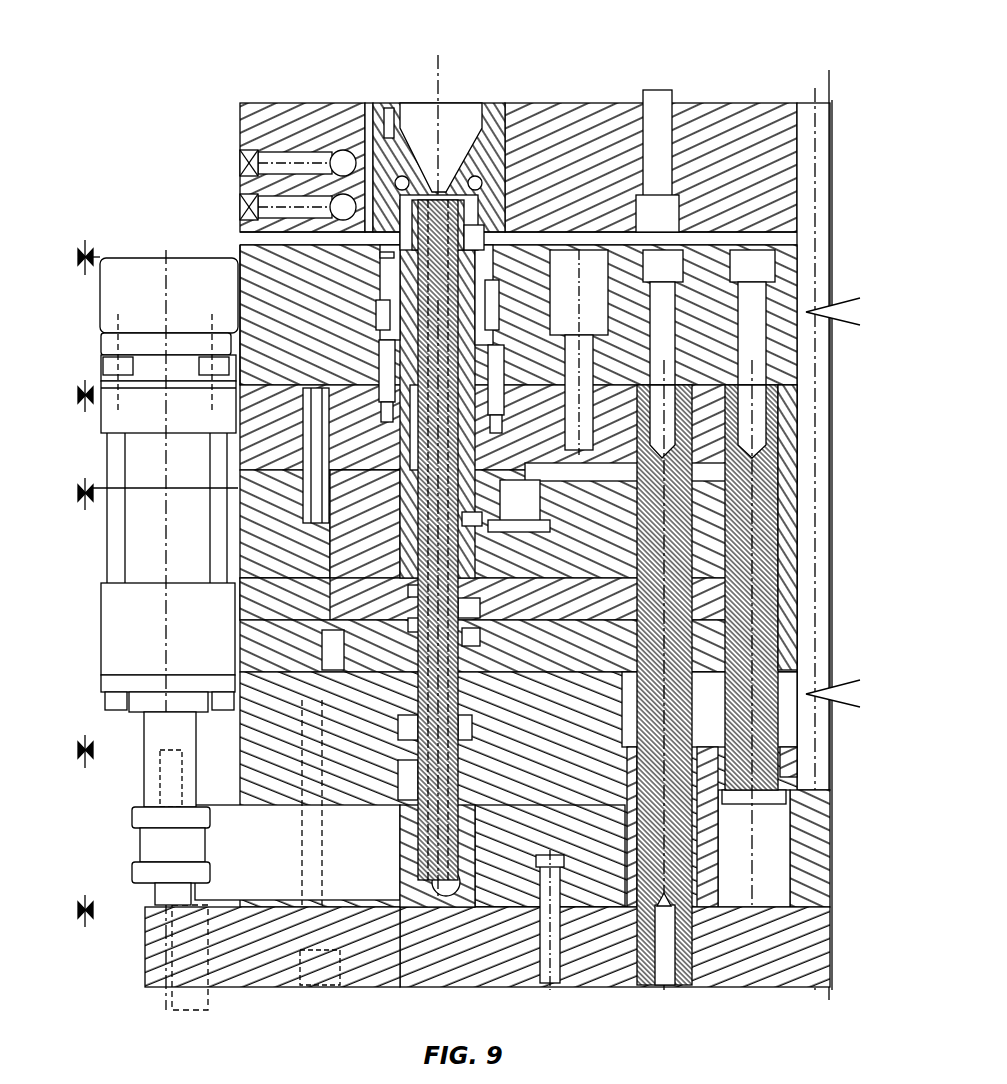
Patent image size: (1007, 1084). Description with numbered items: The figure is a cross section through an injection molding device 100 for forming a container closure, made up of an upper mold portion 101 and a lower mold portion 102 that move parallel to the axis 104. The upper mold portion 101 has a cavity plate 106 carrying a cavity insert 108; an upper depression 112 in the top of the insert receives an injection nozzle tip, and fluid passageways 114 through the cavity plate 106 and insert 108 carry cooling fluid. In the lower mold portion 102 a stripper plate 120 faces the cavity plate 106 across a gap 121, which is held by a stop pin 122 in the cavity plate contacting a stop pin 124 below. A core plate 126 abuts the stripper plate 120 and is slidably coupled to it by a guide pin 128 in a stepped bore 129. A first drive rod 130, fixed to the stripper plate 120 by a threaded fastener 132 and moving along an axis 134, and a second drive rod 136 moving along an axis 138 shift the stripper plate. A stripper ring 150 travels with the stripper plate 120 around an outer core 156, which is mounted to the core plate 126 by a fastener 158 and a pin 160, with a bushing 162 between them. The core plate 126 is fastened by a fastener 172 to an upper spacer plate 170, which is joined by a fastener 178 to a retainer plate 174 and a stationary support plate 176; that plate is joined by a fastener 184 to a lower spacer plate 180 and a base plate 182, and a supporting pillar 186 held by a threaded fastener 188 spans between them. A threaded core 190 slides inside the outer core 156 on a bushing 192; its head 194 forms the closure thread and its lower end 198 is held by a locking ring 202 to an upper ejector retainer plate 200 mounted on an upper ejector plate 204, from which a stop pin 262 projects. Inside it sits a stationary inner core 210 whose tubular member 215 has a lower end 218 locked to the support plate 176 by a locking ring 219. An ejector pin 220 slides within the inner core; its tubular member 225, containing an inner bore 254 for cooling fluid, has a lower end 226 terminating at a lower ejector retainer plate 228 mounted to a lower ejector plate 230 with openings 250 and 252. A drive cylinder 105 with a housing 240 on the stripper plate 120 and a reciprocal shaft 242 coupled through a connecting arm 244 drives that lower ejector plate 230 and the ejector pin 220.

The injection molding device 100 is at (204, 60).
The upper mold portion 101 is at (238, 130).
The lower mold portion 102 is at (722, 988).
The axis 104 is at (437, 76).
The drive cylinder 105 is at (150, 258).
The cavity plate 106 is at (750, 110).
The cavity insert 108 is at (384, 112).
The upper depression 112 is at (490, 180).
The fluid passageways 114 is at (256, 160).
The stripper plate 120 is at (790, 290).
The gap 121 is at (258, 245).
The stop pin 122 is at (832, 176).
The stop pin 124 is at (790, 378).
The core plate 126 is at (790, 432).
The guide pin 128 is at (587, 250).
The stepped bore 129 is at (607, 323).
The first drive rod 130 is at (648, 560).
The threaded fastener 132 is at (688, 250).
The axis 134 is at (640, 601).
The second drive rod 136 is at (774, 736).
The axis 138 is at (764, 860).
The stripper ring 150 is at (496, 240).
The outer core 156 is at (482, 313).
The fastener 158 is at (500, 433).
The pin 160 is at (378, 378).
The bushing 162 is at (392, 318).
The upper spacer plate 170 is at (248, 540).
The fastener 172 is at (302, 427).
The retainer plate 174 is at (252, 608).
The stationary support plate 176 is at (254, 650).
The fastener 178 is at (344, 656).
The lower spacer plate 180 is at (283, 800).
The base plate 182 is at (148, 950).
The fastener 184 is at (320, 977).
The supporting pillar 186 is at (586, 882).
The threaded fastener 188 is at (544, 977).
The threaded core 190 is at (418, 302).
The bushing 192 is at (414, 420).
The head 194 is at (380, 256).
The lower end 198 is at (402, 497).
The upper ejector retainer plate 200 is at (790, 506).
The locking ring 202 is at (478, 527).
The upper ejector plate 204 is at (790, 560).
The inner core 210 is at (460, 606).
The tubular member 215 is at (430, 591).
The lower end 218 is at (433, 618).
The locking ring 219 is at (472, 636).
The ejector pin 220 is at (472, 200).
The tubular member 225 is at (398, 730).
The lower end 226 is at (398, 771).
The lower ejector retainer plate 228 is at (793, 767).
The lower ejector plate 230 is at (823, 874).
The housing 240 is at (100, 305).
The reciprocal shaft 242 is at (132, 815).
The connecting arm 244 is at (285, 888).
The opening 250 is at (427, 826).
The opening 252 is at (432, 875).
The inner bore 254 is at (473, 727).
The stop pin 262 is at (540, 500).